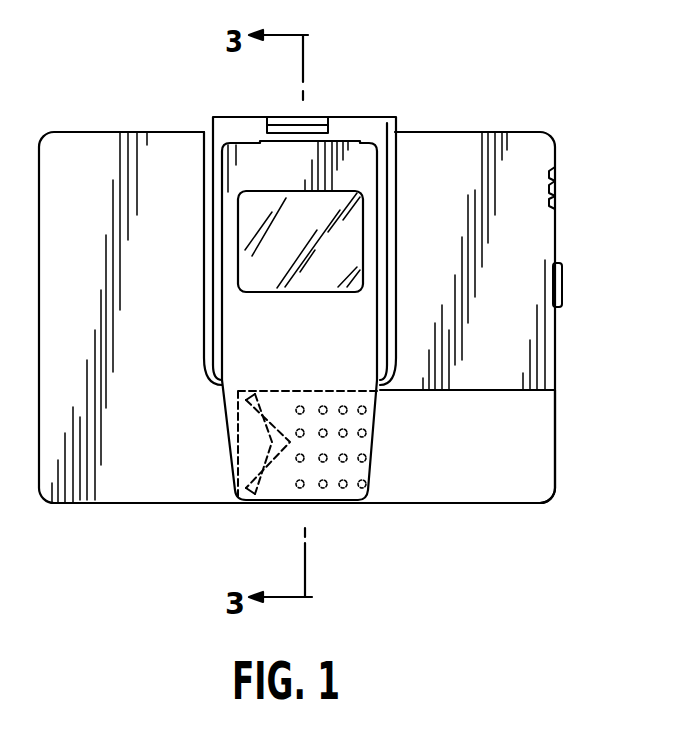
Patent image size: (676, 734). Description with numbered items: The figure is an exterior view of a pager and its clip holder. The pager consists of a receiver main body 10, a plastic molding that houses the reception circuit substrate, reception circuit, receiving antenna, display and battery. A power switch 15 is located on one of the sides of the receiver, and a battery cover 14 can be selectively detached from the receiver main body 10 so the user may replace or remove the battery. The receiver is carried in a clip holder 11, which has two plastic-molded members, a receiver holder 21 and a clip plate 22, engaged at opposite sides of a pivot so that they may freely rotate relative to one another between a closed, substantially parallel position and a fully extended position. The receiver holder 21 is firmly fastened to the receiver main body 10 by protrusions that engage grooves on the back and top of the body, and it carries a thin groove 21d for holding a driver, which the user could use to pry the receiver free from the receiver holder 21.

The receiver main body 10 is at (145, 505).
The clip holder 11 is at (382, 454).
The battery cover 14 is at (545, 462).
The power switch 15 is at (562, 282).
The receiver holder 21 is at (375, 128).
The thin groove 21d is at (323, 125).
The clip plate 22 is at (243, 322).